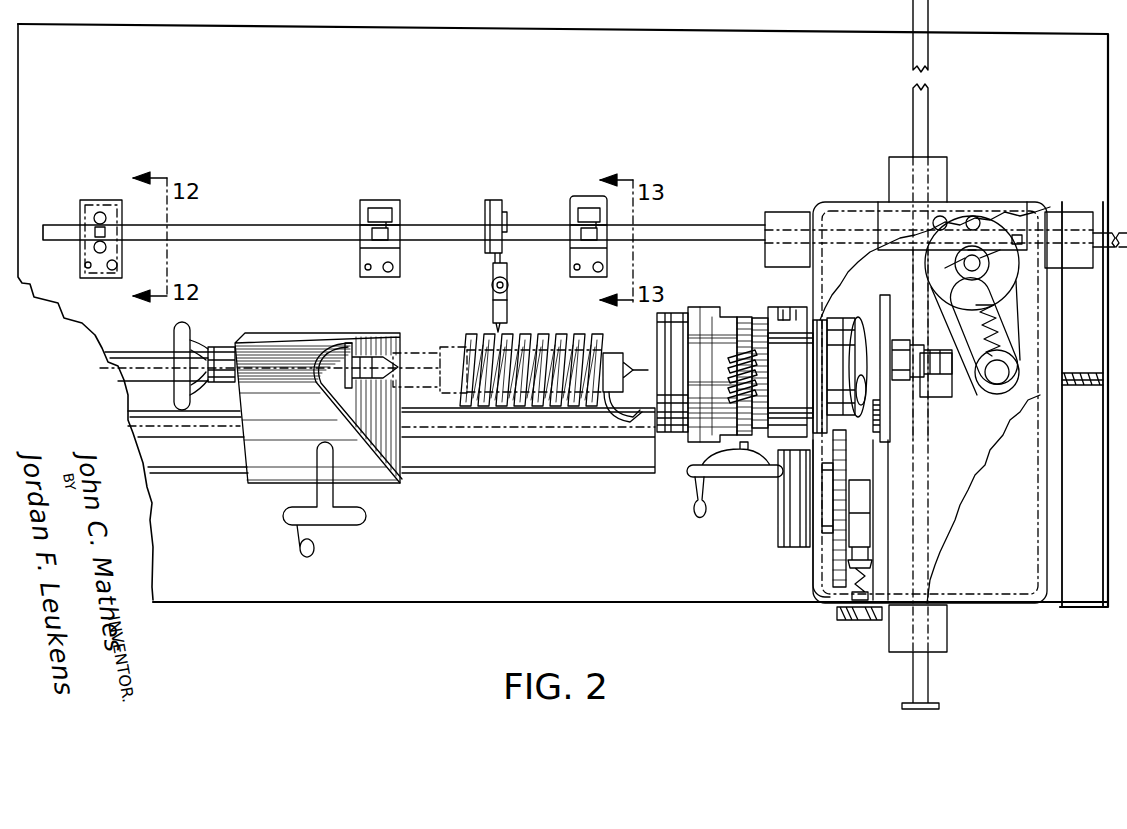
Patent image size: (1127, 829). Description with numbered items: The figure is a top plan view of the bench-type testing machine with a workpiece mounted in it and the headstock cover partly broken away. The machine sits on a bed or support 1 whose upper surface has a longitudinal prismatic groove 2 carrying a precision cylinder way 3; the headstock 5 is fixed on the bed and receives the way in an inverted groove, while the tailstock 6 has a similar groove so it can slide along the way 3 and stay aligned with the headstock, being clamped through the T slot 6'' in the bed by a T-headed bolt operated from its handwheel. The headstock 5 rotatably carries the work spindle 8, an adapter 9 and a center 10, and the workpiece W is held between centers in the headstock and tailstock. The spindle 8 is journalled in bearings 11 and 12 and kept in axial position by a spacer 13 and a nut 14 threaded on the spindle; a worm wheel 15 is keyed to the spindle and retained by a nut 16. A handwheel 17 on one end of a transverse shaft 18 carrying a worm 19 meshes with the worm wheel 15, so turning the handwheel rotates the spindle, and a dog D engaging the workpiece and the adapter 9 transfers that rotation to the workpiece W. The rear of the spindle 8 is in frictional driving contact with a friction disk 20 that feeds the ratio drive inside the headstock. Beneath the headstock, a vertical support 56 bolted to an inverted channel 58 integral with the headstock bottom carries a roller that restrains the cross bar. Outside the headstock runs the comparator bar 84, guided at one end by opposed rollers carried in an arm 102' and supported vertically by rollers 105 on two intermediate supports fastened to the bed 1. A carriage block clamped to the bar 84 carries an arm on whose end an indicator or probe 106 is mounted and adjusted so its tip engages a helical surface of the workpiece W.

The bed or support 1 is at (770, 603).
The prismatic groove 2 is at (1080, 386).
The precision cylinder way 3 is at (1084, 373).
The headstock 5 is at (1050, 205).
The tailstock 6 is at (288, 432).
The T slot in bed 6'' is at (377, 424).
The work spindle 8 is at (682, 316).
The adapter 9 is at (659, 322).
The center 10 is at (650, 374).
The bearing 11 is at (710, 312).
The bearing 12 is at (795, 320).
The spacer 13 is at (806, 356).
The nut 14 is at (823, 330).
The worm wheel 15 is at (742, 316).
The nut 16 is at (760, 322).
The handwheel 17 is at (712, 510).
The shaft 18 is at (712, 465).
The worm 19 is at (728, 366).
The friction disk 20 is at (834, 605).
The vertical support 56 is at (953, 337).
The inverted channel 58 is at (970, 402).
The comparator bar 84 is at (445, 241).
The arm 102' is at (93, 224).
The rollers 105 is at (402, 232).
The indicator or probe 106 is at (495, 333).
The workpiece W is at (458, 353).
The dog D is at (616, 440).